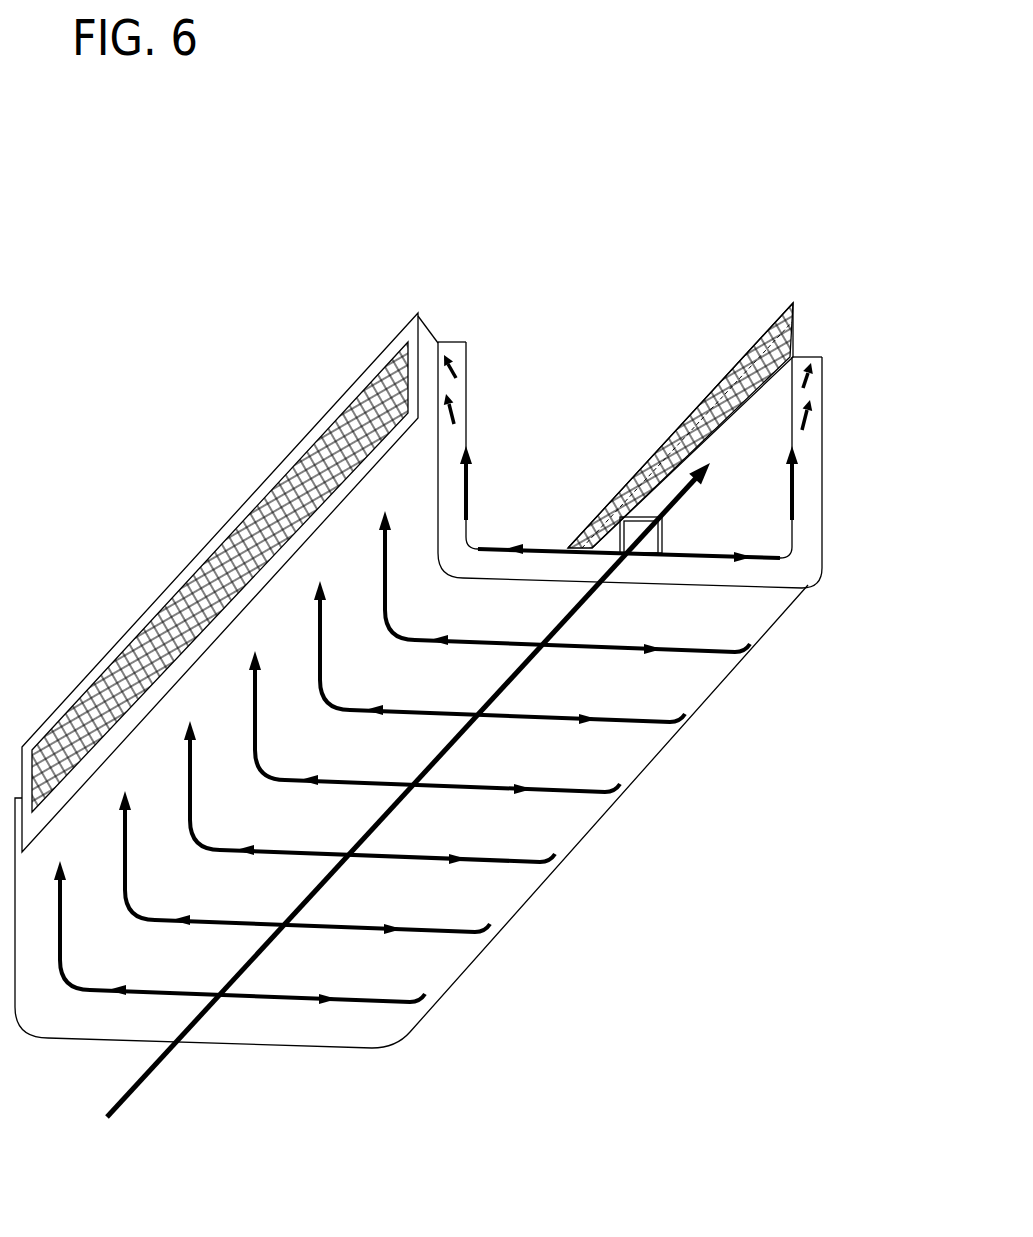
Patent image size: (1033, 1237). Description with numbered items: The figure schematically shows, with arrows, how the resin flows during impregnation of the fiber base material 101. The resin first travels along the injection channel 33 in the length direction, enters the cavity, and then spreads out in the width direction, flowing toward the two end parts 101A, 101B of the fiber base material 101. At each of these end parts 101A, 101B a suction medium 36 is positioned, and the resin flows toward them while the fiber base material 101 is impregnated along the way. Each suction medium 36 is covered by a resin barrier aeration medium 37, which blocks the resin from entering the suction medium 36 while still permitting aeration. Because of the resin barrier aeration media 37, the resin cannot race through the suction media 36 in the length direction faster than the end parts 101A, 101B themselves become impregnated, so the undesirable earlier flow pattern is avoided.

The fiber base material 101 is at (713, 688).
The end part 101A is at (450, 340).
The end part 101B is at (805, 358).
The resin barrier aeration medium 37 is at (367, 372).
The suction medium 36 is at (286, 473).
The injection channel 33 is at (662, 535).